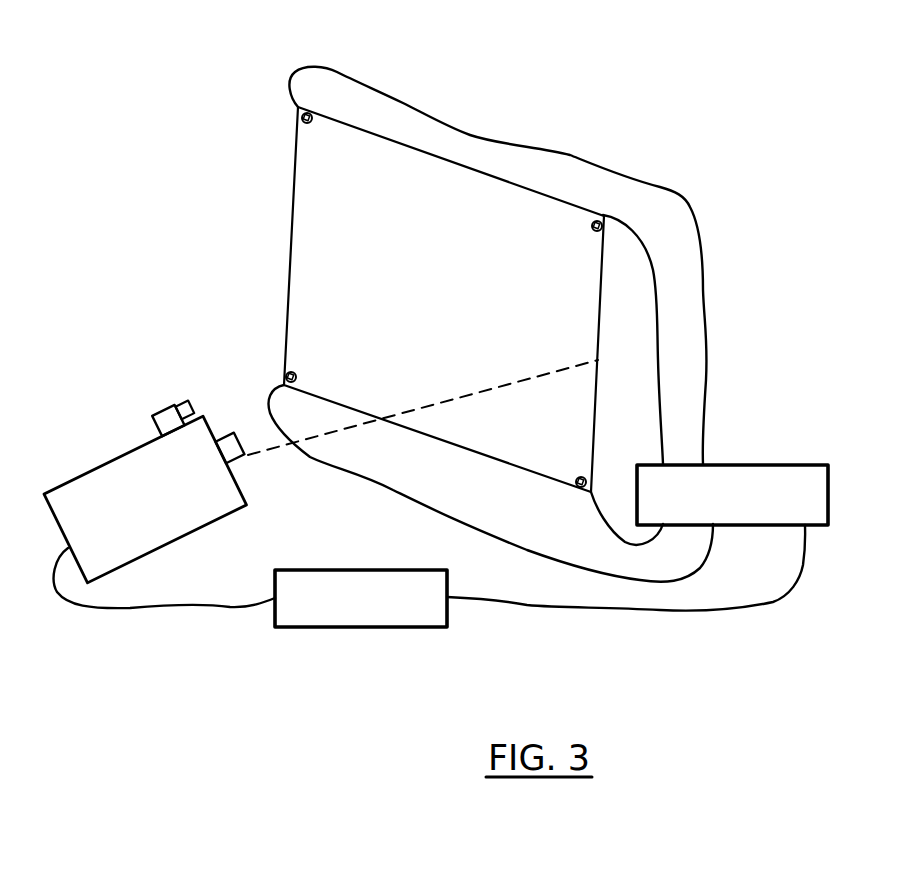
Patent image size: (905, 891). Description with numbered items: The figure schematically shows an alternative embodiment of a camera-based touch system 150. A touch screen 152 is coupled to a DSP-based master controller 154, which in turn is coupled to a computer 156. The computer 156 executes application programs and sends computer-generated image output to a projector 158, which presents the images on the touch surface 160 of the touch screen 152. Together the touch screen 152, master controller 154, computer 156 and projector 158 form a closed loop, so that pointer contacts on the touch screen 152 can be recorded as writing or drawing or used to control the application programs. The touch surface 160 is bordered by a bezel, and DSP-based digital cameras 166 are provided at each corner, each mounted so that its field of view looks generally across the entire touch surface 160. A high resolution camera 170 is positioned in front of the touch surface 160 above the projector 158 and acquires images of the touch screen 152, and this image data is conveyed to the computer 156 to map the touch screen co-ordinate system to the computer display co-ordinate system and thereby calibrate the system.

The camera-based touch system 150 is at (724, 148).
The touch screen 152 is at (558, 197).
The DSP-based master controller 154 is at (760, 467).
The computer 156 is at (371, 630).
The projector 158 is at (118, 464).
The touch surface 160 is at (444, 304).
The DSP-based digital cameras 166 is at (313, 127).
The high resolution camera 170 is at (167, 403).